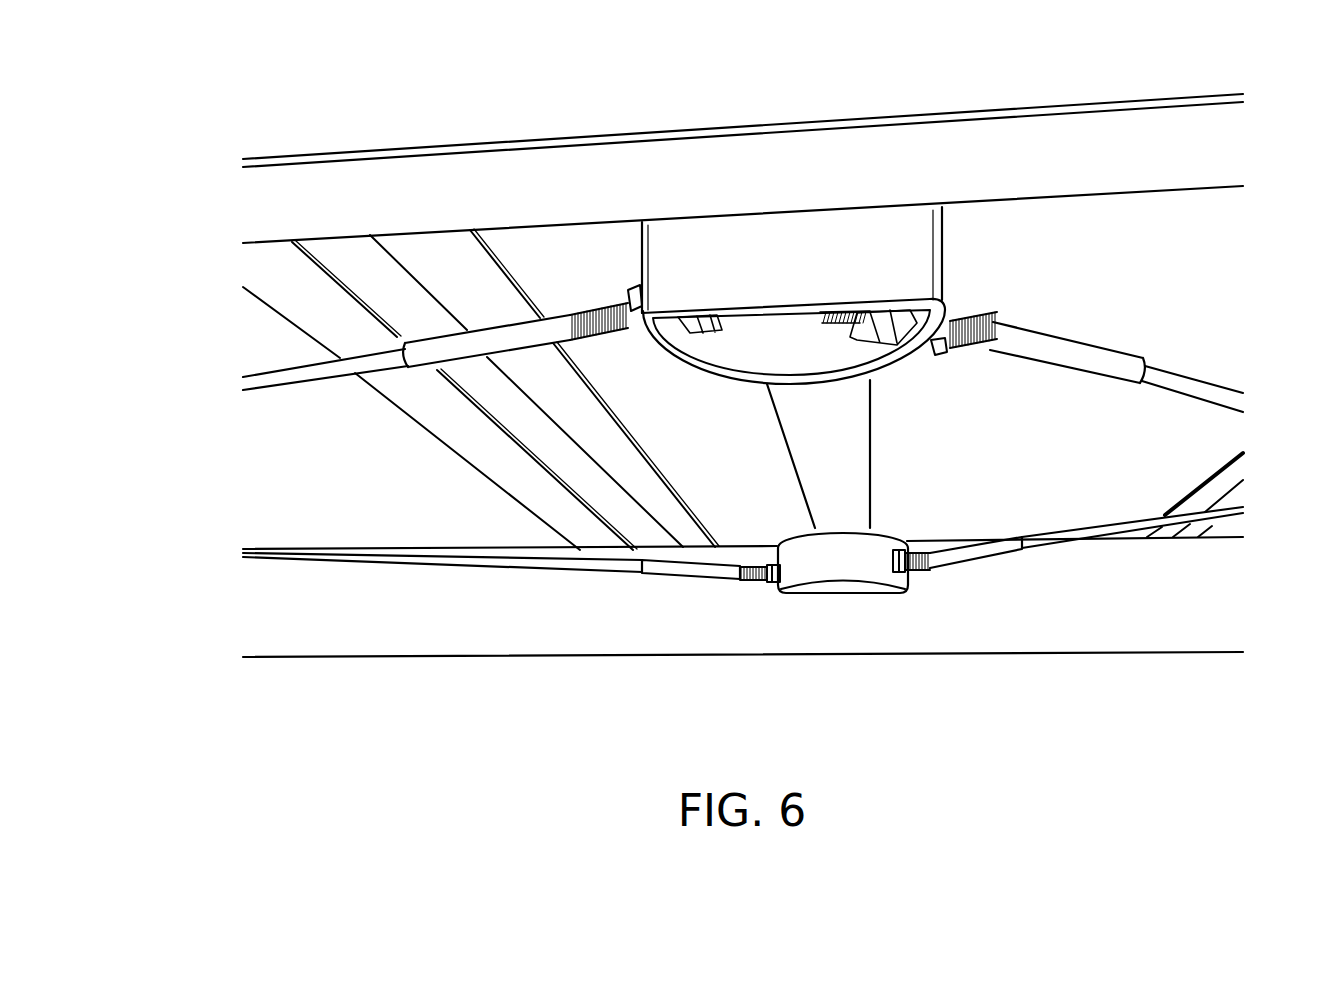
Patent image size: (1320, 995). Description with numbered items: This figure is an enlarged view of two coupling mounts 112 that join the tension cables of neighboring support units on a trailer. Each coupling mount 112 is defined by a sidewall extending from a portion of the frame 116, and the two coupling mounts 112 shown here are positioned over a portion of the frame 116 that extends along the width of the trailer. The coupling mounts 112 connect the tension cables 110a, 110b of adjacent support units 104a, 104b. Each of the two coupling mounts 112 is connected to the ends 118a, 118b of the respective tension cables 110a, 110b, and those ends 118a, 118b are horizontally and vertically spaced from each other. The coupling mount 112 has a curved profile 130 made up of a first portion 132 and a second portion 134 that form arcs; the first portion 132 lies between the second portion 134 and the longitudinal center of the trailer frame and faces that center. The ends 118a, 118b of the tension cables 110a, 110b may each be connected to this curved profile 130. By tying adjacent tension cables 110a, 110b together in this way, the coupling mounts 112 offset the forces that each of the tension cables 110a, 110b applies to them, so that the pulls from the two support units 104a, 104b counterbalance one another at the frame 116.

The support unit 104a is at (336, 423).
The support unit 104b is at (1013, 427).
The tension cable 110a is at (256, 378).
The tension cable 110b is at (1190, 382).
The coupling mount 112 is at (812, 237).
The frame 116 is at (850, 435).
The end of tension cable 118a is at (598, 310).
The end of tension cable 118b is at (975, 333).
The curved profile 130 is at (710, 380).
The first portion 132 is at (760, 385).
The second portion 134 is at (662, 357).